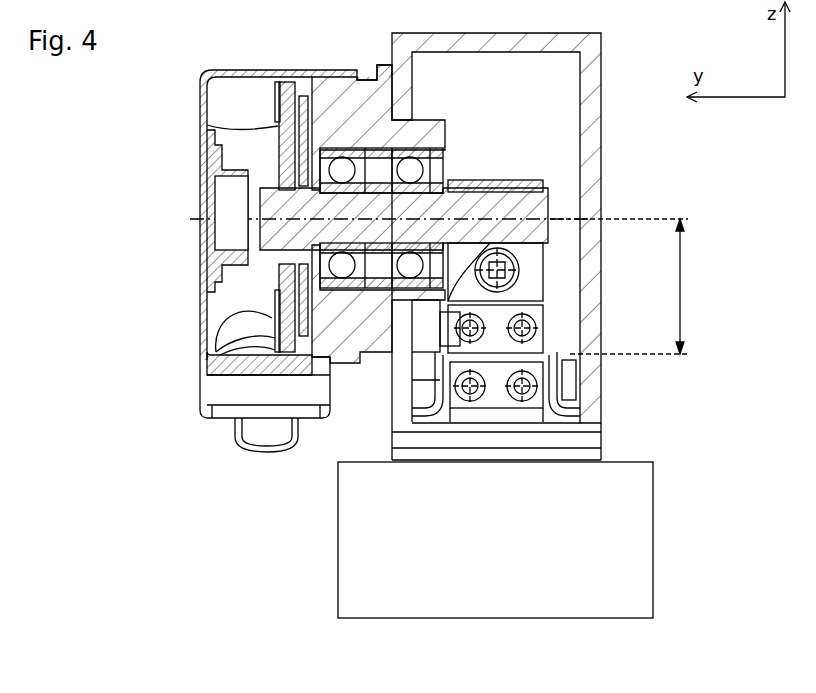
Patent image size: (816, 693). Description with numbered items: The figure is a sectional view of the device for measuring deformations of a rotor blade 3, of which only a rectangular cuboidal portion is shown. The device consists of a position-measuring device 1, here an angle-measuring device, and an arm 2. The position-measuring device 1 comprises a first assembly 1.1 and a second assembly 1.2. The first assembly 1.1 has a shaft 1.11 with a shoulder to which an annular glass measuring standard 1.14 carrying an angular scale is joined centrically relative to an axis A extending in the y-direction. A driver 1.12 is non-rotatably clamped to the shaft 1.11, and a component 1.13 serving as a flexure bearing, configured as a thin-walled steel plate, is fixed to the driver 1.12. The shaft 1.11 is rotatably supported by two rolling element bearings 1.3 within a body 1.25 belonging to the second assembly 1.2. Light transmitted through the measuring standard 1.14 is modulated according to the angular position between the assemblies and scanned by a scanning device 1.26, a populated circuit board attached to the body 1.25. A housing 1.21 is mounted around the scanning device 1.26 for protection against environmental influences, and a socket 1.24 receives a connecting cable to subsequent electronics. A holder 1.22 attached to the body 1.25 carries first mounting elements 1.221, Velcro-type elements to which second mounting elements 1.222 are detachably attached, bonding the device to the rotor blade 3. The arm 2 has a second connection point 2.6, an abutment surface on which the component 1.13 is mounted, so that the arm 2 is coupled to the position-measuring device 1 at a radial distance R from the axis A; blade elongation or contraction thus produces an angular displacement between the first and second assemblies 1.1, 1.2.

The position-measuring device 1 is at (195, 171).
The first assembly 1.1 is at (549, 164).
The shaft 1.11 is at (555, 222).
The driver 1.12 is at (545, 284).
The component 1.13 is at (545, 352).
The measuring standard 1.14 is at (297, 108).
The second assembly 1.2 is at (198, 262).
The housing 1.21 is at (207, 88).
The holder 1.22 is at (592, 166).
The first mounting elements 1.221 is at (588, 440).
The second mounting elements 1.222 is at (588, 455).
The socket 1.24 is at (238, 432).
The body 1.25 is at (425, 136).
The scanning device 1.26 is at (280, 127).
The rolling element bearings 1.3 is at (345, 180).
The arm 2 is at (620, 393).
The second connection point 2.6 is at (535, 390).
The rotor blade 3 is at (493, 512).
The axis A is at (200, 219).
The radial distance R is at (623, 286).